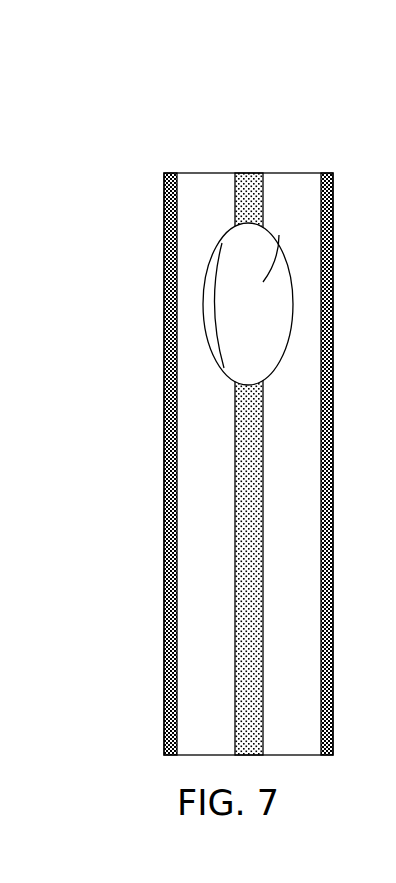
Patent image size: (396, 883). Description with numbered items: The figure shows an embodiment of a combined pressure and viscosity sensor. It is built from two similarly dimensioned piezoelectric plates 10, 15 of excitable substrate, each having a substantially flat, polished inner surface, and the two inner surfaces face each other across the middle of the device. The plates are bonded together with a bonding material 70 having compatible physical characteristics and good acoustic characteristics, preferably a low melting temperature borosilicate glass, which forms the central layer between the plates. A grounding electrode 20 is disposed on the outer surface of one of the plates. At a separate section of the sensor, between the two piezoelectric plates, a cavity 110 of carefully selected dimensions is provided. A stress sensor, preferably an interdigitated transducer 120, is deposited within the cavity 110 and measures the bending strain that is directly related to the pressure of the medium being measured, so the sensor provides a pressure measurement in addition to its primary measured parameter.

The piezoelectric plate 10 is at (188, 397).
The piezoelectric plate 15 is at (312, 172).
The grounding electrode 20 is at (165, 487).
The bonding material 70 is at (250, 172).
The cavity 110 is at (279, 235).
The interdigitated transducer 120 is at (203, 308).